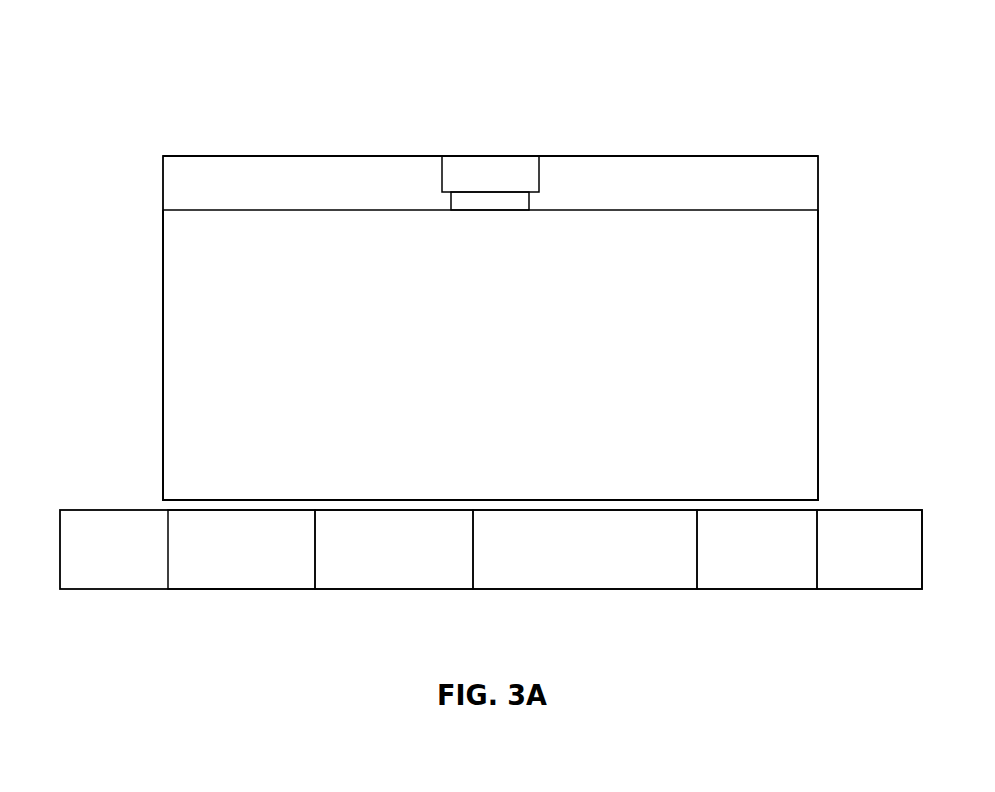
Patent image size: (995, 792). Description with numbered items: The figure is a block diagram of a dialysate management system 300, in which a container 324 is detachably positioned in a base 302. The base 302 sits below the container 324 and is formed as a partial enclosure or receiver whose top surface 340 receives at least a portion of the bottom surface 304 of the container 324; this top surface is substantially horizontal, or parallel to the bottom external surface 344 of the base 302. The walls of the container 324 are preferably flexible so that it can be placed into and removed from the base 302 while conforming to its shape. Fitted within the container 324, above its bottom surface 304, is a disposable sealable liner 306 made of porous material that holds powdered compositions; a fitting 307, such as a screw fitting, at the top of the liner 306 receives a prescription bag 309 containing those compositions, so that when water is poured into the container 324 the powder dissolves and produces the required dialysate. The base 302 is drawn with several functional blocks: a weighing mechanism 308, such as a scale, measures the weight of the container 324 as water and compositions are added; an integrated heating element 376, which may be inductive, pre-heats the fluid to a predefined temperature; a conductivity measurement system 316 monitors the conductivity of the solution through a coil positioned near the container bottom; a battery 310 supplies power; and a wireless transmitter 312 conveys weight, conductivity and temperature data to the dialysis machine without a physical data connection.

The dialysate management system 300 is at (131, 38).
The base 302 is at (60, 562).
The bottom surface 304 is at (797, 498).
The disposable sealable liner 306 is at (222, 194).
The fitting 307 is at (462, 203).
The weighing mechanism 308 is at (263, 561).
The prescription bag 309 is at (497, 168).
The battery 310 is at (780, 561).
The wireless transmitter 312 is at (892, 561).
The conductivity measurement system 316 is at (608, 561).
The container 324 is at (222, 300).
The top surface 340 is at (193, 508).
The bottom external surface 344 is at (238, 590).
The integrated heating element 376 is at (415, 561).